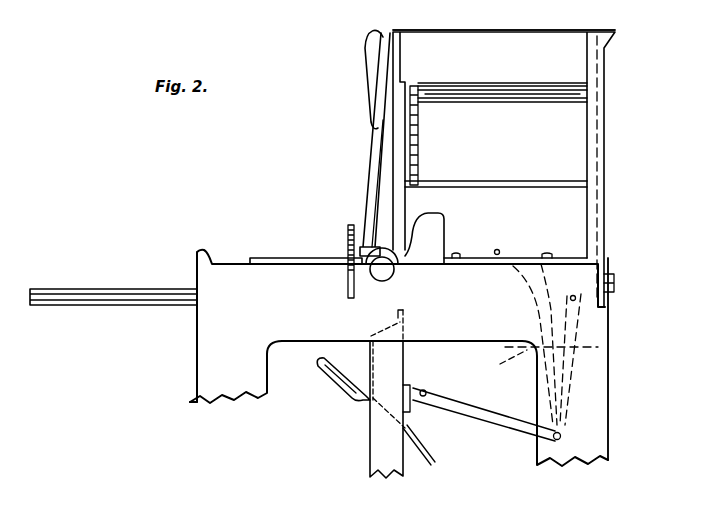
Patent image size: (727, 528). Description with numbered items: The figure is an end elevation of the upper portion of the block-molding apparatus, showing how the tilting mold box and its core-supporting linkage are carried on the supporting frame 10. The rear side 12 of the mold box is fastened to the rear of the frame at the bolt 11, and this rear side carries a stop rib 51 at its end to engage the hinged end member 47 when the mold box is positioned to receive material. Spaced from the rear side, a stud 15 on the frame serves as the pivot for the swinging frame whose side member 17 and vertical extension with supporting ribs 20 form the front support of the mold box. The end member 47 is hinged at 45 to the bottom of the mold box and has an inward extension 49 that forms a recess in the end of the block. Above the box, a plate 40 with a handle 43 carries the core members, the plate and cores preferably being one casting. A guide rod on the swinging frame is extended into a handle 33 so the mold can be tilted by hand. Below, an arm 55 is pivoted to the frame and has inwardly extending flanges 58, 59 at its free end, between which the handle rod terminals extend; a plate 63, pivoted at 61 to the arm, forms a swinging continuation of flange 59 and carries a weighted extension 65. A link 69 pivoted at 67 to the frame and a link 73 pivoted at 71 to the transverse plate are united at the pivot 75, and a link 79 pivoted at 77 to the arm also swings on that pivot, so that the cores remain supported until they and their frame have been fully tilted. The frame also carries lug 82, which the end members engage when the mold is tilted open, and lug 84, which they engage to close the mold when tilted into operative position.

The supporting frame 10 is at (597, 425).
The bolt 11 is at (616, 284).
The rear side 12 is at (604, 118).
The stud 15 is at (395, 269).
The side member 17 is at (284, 257).
The supporting rib 20 is at (383, 178).
The handle 33 is at (66, 306).
The plate 40 is at (372, 162).
The handle 43 is at (365, 60).
The hinge 45 is at (457, 255).
The end member 47 is at (548, 30).
The inward extension 49 is at (578, 102).
The stop rib 51 is at (598, 156).
The arm 55 is at (365, 458).
The flange 58 is at (406, 316).
The flange 59 is at (371, 356).
The pivot 61 is at (372, 402).
The plate 63 is at (419, 448).
The weighted extension 65 is at (333, 375).
The pivot 67 is at (575, 296).
The link 69 is at (598, 344).
The pivot 71 is at (497, 250).
The link 73 is at (504, 364).
The pivot 75 is at (561, 437).
The pivot 77 is at (423, 390).
The link 79 is at (473, 421).
The lug 82 is at (348, 236).
The lug 84 is at (432, 221).